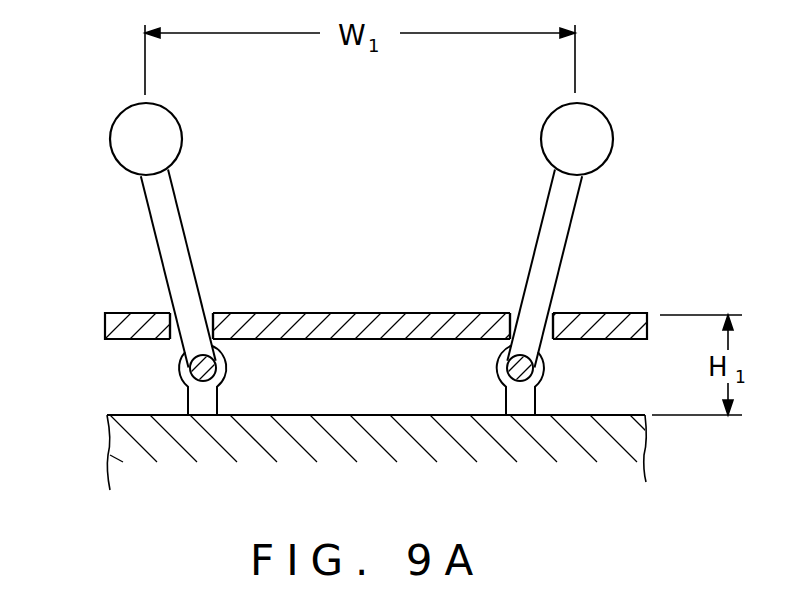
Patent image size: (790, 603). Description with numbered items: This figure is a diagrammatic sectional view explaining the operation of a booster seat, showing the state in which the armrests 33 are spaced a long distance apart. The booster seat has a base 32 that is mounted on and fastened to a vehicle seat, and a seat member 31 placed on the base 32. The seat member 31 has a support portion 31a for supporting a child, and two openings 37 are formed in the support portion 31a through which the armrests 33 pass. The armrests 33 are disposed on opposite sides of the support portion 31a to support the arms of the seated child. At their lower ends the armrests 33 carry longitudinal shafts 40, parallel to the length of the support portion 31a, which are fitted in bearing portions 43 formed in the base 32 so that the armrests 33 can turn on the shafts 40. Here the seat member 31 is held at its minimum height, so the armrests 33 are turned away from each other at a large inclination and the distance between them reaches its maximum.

The seat member 31 is at (615, 308).
The support portion 31a is at (363, 312).
The base 32 is at (605, 462).
The armrest 33 is at (110, 137).
The opening 37 is at (205, 312).
The shaft 40 is at (192, 373).
The bearing portion 43 is at (230, 374).